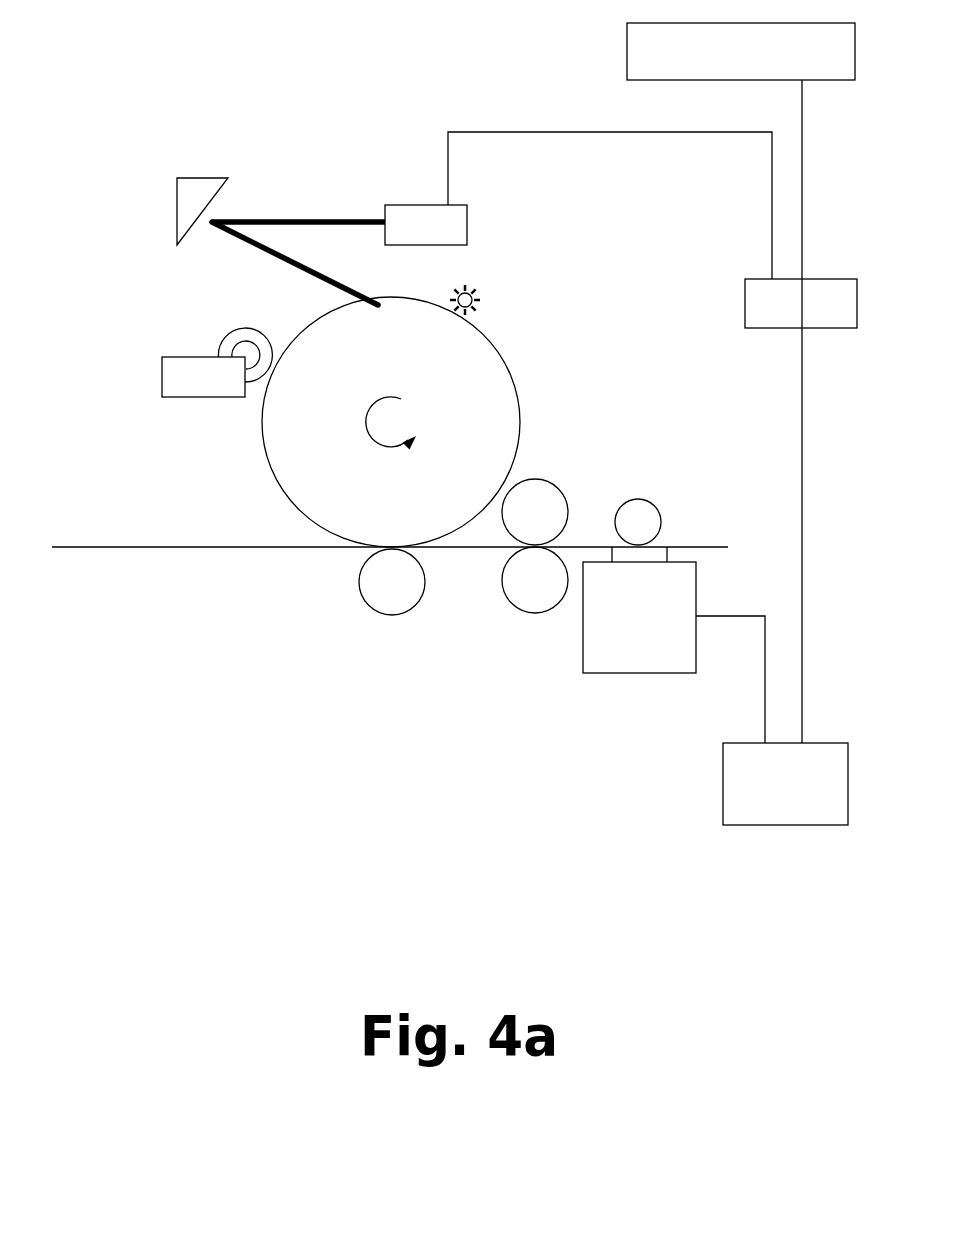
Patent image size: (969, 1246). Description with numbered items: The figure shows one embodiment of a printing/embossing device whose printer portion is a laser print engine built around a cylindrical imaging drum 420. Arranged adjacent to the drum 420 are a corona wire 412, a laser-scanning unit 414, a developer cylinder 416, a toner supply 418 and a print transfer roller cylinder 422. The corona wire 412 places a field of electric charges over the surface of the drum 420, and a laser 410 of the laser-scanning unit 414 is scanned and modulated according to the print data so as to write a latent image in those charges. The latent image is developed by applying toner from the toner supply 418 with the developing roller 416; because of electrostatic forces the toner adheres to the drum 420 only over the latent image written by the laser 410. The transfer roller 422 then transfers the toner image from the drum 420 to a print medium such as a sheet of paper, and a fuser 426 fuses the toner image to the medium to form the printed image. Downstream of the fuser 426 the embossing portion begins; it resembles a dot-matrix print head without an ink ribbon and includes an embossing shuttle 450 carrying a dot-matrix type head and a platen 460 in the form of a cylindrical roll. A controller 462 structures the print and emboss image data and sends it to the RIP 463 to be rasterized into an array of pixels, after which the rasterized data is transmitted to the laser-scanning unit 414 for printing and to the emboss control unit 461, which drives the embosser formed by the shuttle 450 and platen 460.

The laser 410 is at (265, 255).
The corona wire 412 is at (477, 292).
The laser-scanning unit 414 is at (428, 222).
The developer cylinder 416 is at (213, 343).
The toner supply 418 is at (160, 376).
The drum 420 is at (265, 472).
The print transfer roller cylinder 422 is at (358, 580).
The fuser 426 is at (533, 615).
The embossing shuttle 450 is at (638, 673).
The platen 460 is at (637, 495).
The emboss control unit 461 is at (745, 825).
The controller 462 is at (627, 52).
The RIP 463 is at (745, 303).